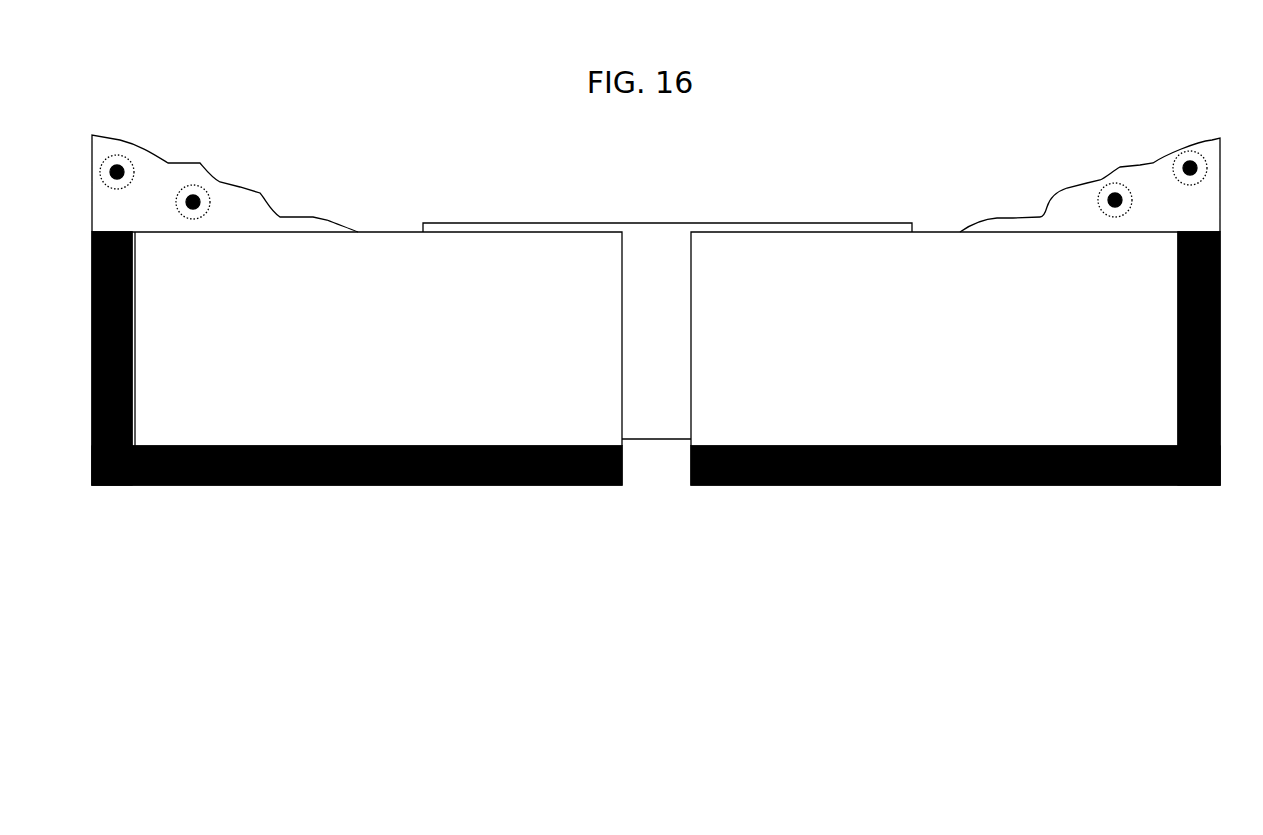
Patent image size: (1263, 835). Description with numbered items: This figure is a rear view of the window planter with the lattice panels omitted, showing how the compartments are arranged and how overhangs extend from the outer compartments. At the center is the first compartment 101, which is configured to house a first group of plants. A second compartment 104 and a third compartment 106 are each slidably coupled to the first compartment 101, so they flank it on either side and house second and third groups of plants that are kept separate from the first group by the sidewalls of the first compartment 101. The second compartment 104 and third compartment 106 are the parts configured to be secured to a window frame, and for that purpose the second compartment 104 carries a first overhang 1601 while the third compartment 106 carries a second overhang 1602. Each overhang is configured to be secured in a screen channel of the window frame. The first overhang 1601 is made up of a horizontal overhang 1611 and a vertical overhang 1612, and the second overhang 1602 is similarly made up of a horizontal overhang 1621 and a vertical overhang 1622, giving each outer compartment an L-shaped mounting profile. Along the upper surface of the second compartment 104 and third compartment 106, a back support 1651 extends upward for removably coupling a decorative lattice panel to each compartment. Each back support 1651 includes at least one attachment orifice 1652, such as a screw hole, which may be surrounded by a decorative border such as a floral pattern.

The first compartment 101 is at (660, 379).
The second compartment 104 is at (512, 379).
The third compartment 106 is at (827, 400).
The first overhang 1601 is at (132, 496).
The second overhang 1602 is at (1195, 496).
The horizontal overhang 1611 is at (255, 485).
The vertical overhang 1612 is at (120, 231).
The horizontal overhang 1621 is at (1068, 485).
The vertical overhang 1622 is at (1197, 232).
The back support 1651 is at (1041, 200).
The attachment orifice 1652 is at (1112, 199).